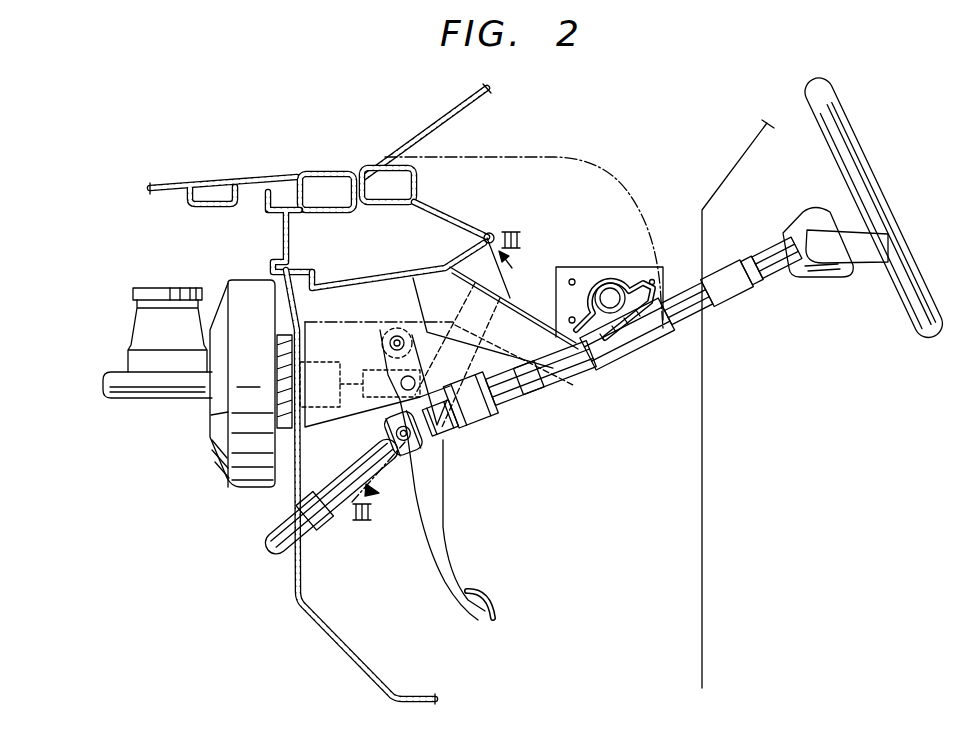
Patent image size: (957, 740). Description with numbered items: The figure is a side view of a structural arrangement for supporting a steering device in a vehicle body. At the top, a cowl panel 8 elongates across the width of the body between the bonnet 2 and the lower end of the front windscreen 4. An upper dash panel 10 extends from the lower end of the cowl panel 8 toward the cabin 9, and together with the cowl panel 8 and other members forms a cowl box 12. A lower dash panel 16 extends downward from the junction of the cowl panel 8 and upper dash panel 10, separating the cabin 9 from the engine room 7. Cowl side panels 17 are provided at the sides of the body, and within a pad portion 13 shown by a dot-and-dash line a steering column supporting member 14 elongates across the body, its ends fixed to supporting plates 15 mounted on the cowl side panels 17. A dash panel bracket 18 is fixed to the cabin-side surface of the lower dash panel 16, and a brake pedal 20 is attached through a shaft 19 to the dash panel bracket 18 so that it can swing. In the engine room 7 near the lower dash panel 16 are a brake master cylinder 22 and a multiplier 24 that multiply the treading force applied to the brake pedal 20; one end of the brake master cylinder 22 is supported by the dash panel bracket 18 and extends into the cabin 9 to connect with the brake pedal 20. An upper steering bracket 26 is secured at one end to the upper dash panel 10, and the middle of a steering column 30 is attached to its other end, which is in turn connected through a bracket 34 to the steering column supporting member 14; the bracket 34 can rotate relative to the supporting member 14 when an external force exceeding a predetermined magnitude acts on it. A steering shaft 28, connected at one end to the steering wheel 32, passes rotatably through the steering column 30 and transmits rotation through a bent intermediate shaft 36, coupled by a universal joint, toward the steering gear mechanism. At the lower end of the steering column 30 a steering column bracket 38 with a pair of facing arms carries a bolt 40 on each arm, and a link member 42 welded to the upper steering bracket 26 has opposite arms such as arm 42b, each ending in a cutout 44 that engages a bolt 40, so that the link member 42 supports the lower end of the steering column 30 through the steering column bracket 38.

The bonnet 2 is at (192, 185).
The front windscreen 4 is at (428, 126).
The engine room 7 is at (145, 538).
The cowl panel 8 is at (284, 241).
The cabin 9 is at (678, 560).
The upper dash panel 10 is at (430, 266).
The cowl box 12 is at (367, 254).
The pad portion 13 is at (522, 157).
The steering column supporting member 14 is at (603, 284).
The supporting plate 15 is at (616, 280).
The lower dash panel 16 is at (295, 480).
The cowl side panel 17 is at (702, 468).
The dash panel bracket 18 is at (330, 421).
The shaft 19 is at (382, 341).
The brake pedal 20 is at (445, 543).
The brake master cylinder 22 is at (152, 399).
The multiplier 24 is at (210, 456).
The upper steering bracket 26 is at (528, 312).
The steering shaft 28 is at (778, 251).
The steering column 30 is at (696, 336).
The steering wheel 32 is at (860, 131).
The bracket 34 is at (646, 282).
The intermediate shaft 36 is at (350, 518).
The steering column bracket 38 is at (455, 441).
The bolt 40 is at (422, 441).
The link member 42 is at (480, 366).
The opposite arm 42b is at (492, 352).
The cutout 44 is at (455, 426).